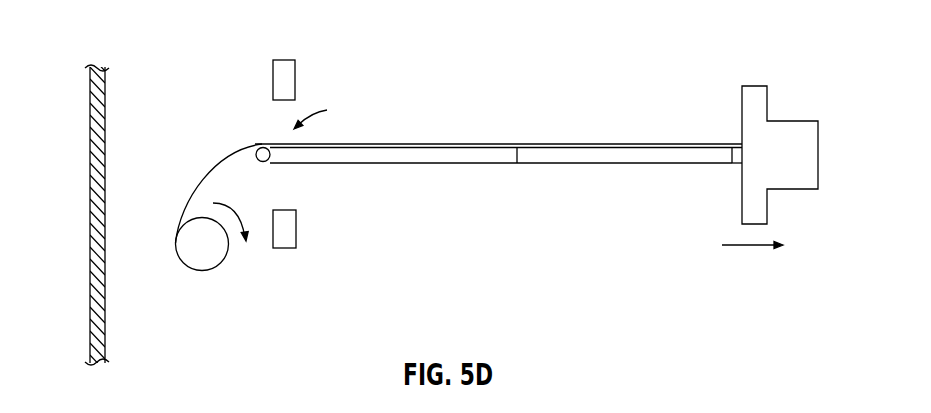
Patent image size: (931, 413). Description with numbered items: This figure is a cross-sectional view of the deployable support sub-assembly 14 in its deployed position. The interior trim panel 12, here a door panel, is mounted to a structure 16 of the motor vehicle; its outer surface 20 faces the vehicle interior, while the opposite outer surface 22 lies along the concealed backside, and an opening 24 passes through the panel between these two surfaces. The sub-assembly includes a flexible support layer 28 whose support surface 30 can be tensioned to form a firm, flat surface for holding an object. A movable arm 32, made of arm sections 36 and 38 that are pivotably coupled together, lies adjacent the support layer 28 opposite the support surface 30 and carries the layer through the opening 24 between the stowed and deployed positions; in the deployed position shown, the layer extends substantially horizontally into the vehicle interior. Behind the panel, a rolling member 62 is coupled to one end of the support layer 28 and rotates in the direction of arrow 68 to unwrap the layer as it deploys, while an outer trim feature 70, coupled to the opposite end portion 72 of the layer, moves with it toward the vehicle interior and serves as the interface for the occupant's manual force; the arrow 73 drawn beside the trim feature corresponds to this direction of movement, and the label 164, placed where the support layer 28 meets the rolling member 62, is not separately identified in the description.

The interior trim panel 12 is at (288, 64).
The deployable support sub-assembly 14 is at (463, 163).
The structure 16 is at (90, 207).
The outer surface 20 is at (296, 78).
The outer surface 22 is at (273, 78).
The opening 24 is at (324, 113).
The support layer 28 is at (205, 172).
The support surface 30 is at (470, 143).
The movable arm 32 is at (590, 155).
The arm section 36 is at (423, 162).
The arm section 38 is at (641, 163).
The rolling member 62 is at (195, 265).
The single headed arrow 68 is at (232, 201).
The outer trim feature 70 is at (787, 178).
The end portion 72 is at (733, 142).
The pulling direction 73 is at (758, 247).
The strip bend junction 164 is at (176, 243).